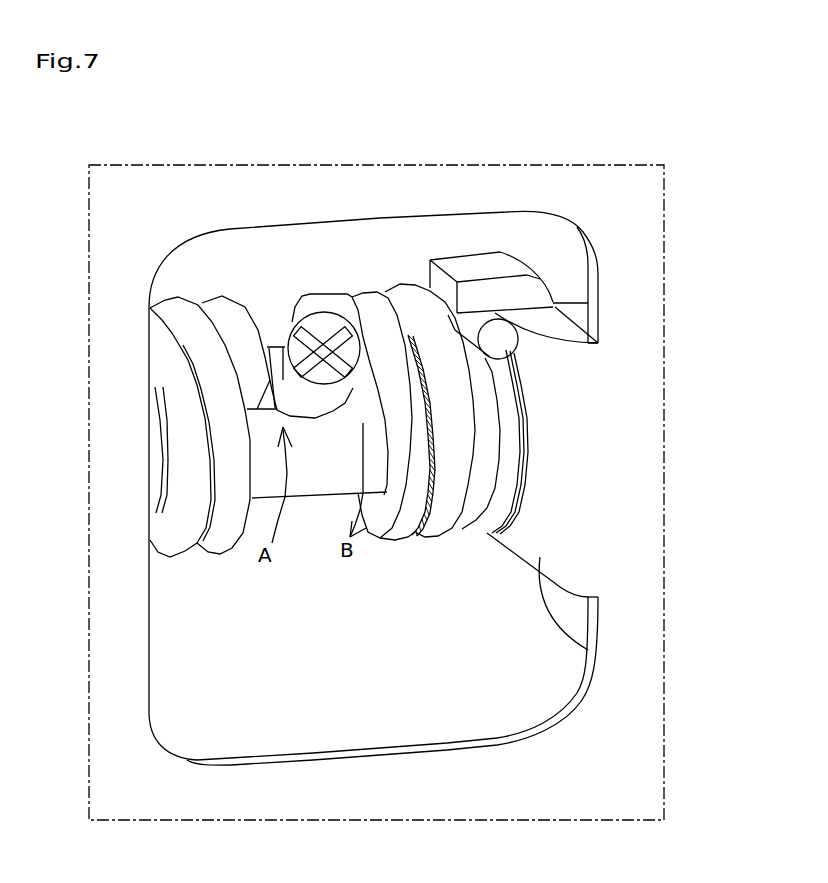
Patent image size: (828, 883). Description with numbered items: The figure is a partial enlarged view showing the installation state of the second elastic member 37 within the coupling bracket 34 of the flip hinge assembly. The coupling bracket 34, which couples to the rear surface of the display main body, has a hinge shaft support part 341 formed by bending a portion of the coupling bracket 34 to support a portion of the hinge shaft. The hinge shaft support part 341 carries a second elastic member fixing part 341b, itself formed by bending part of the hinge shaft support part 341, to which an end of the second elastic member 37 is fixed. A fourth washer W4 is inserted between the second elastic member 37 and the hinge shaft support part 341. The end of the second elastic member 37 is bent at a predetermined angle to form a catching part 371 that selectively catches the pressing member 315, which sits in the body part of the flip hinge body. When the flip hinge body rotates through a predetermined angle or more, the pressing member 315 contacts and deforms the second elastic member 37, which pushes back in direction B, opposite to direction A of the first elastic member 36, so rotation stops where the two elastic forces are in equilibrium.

The coupling bracket 34 is at (452, 192).
The hinge shaft support part 341 is at (588, 650).
The second elastic member fixing part 341b is at (483, 267).
The first elastic member 36 is at (180, 472).
The second elastic member 37 is at (445, 523).
The catching part 371 is at (351, 307).
The pressing member 315 is at (323, 352).
The fourth washer W4 is at (507, 477).